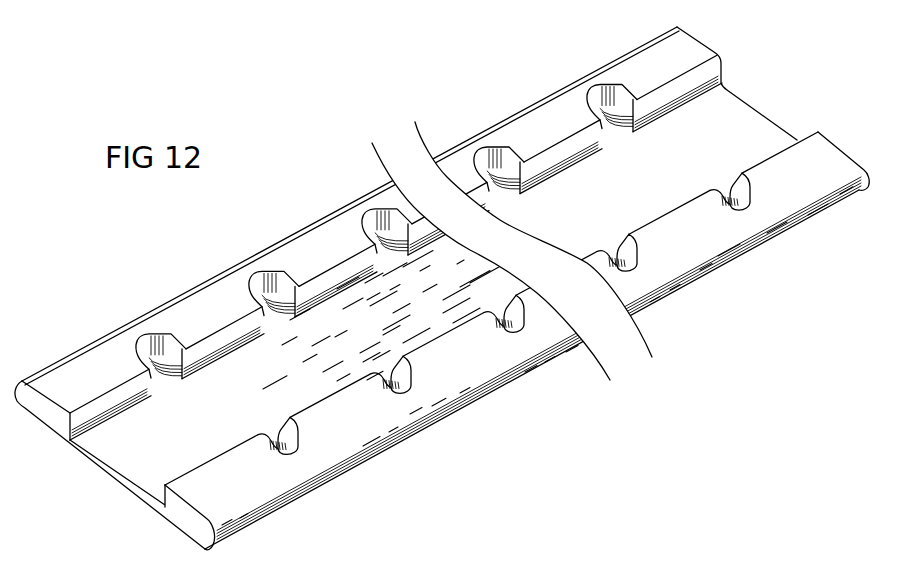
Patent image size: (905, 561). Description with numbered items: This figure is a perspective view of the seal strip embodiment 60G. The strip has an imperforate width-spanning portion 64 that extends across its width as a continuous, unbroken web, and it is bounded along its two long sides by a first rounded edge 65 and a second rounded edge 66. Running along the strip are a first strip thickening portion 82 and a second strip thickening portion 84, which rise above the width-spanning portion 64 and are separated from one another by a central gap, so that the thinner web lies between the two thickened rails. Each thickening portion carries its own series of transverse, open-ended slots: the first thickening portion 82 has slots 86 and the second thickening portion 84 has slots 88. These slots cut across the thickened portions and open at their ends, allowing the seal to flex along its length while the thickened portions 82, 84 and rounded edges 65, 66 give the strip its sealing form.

The seal strip embodiment 60G is at (303, 166).
The imperforate width-spanning portion 64 is at (166, 453).
The first rounded edge 65 is at (172, 300).
The second rounded edge 66 is at (365, 466).
The first strip thickening portion 82 is at (106, 381).
The second strip thickening portion 84 is at (251, 493).
The transverse open-ended slots 86 is at (260, 277).
The transverse open-ended slots 88 is at (409, 391).